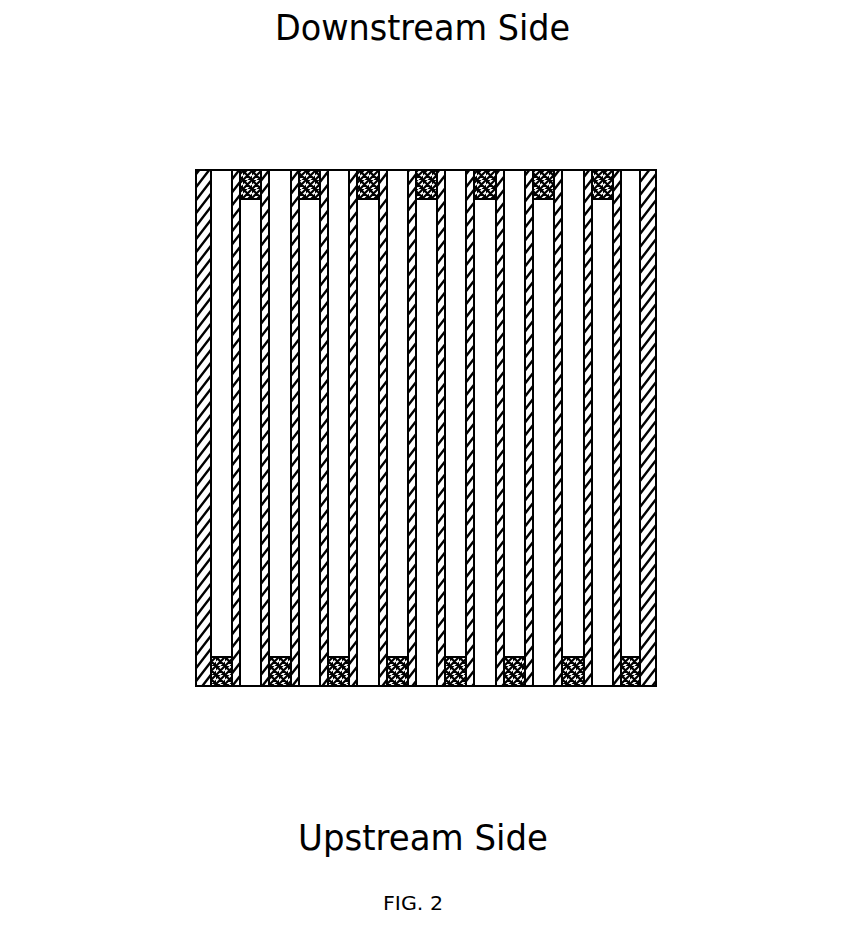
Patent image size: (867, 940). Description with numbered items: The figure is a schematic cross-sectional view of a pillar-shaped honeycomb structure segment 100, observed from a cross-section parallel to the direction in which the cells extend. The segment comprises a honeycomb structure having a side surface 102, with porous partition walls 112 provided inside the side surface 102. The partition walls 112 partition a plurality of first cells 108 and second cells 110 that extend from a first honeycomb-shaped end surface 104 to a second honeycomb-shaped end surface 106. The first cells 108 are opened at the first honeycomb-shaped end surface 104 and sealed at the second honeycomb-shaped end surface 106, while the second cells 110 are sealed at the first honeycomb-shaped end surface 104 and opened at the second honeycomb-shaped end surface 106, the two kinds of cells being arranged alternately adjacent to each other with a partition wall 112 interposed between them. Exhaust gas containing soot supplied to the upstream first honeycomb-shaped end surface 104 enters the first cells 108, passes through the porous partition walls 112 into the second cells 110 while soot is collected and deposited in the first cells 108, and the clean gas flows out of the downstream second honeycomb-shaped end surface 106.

The pillar-shaped honeycomb structure segment 100 is at (140, 229).
The side surface 102 is at (657, 372).
The first honeycomb-shaped end surface 104 is at (543, 703).
The second honeycomb-shaped end surface 106 is at (235, 149).
The first cells 108 is at (251, 684).
The second cells 110 is at (282, 177).
The partition walls 112 is at (237, 368).